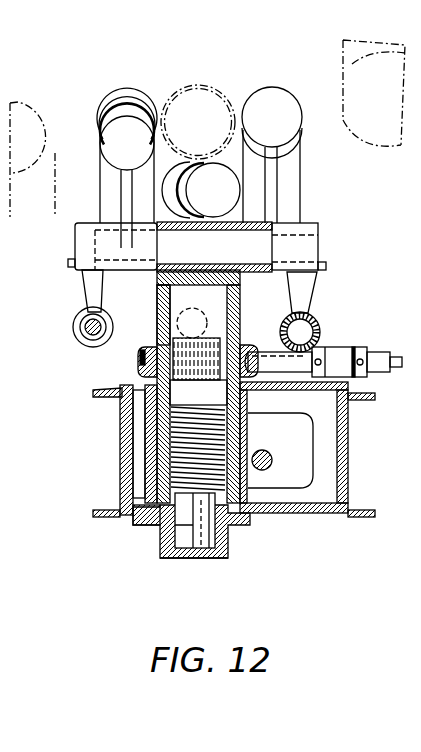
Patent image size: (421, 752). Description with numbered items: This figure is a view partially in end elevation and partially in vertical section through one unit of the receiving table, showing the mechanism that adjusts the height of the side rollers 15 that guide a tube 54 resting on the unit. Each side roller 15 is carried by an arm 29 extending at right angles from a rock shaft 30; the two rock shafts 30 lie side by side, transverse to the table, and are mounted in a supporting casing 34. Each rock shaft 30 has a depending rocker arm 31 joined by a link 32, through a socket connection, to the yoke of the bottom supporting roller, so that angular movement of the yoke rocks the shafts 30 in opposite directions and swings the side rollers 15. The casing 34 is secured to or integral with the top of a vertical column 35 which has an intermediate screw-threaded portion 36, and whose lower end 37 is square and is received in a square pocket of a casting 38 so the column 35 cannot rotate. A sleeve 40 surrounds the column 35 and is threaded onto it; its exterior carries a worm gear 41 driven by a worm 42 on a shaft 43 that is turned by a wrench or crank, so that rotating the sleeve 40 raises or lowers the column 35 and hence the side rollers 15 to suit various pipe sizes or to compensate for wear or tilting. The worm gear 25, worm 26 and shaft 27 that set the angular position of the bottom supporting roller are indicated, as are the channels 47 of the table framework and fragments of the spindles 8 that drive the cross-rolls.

The spindles 8 is at (32, 120).
The side rollers 15 is at (125, 91).
The worm gear 25 is at (0, 505).
The worm 26 is at (0, 404).
The shaft 27 is at (266, 451).
The arm 29 is at (108, 190).
The rock shaft 30 is at (320, 242).
The depending rocker arm 31 is at (86, 297).
The link 32 is at (76, 330).
The supporting casing 34 is at (240, 222).
The vertical column 35 is at (150, 330).
The screw-threaded portion 36 is at (165, 457).
The lower end 37 is at (224, 533).
The casting 38 is at (217, 562).
The sleeve 40 is at (240, 313).
The worm gear 41 is at (140, 346).
The worm 42 is at (198, 399).
The shaft 43 is at (391, 373).
The channels 47 is at (365, 518).
The tube 54 is at (211, 89).